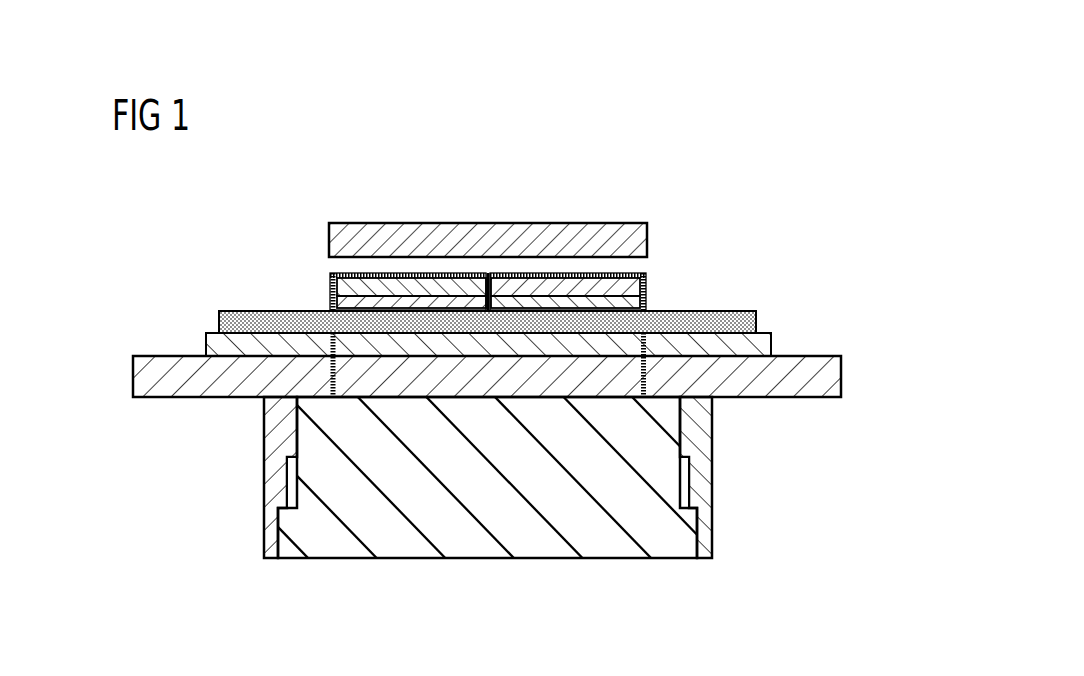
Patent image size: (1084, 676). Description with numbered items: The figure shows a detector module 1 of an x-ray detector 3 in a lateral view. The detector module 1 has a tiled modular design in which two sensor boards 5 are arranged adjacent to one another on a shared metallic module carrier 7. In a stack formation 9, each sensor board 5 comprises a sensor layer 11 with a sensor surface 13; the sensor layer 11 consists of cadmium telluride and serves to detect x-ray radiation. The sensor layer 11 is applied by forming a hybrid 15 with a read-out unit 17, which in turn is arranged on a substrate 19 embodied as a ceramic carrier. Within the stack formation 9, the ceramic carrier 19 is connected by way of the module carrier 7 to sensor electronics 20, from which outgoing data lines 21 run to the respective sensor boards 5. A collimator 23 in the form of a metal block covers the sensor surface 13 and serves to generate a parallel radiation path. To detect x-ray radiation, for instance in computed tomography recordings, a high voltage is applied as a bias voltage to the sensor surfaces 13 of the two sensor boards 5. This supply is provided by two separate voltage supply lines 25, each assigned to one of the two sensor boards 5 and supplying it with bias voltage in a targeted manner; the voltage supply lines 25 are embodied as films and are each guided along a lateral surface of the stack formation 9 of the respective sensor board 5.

The detector module 1 is at (677, 176).
The x-ray detector 3 is at (243, 215).
The sensor board 5 is at (666, 252).
The module carrier 7 is at (841, 380).
The stack formation 9 is at (698, 259).
The sensor layer 11 is at (333, 279).
The sensor surface 13 is at (405, 273).
The hybrid 15 is at (262, 289).
The read-out unit 17 is at (627, 303).
The substrate 19 is at (237, 323).
The sensor electronics 20 is at (549, 545).
The data line 21 is at (333, 377).
The collimator 23 is at (535, 232).
The voltage supply line 25 is at (608, 271).